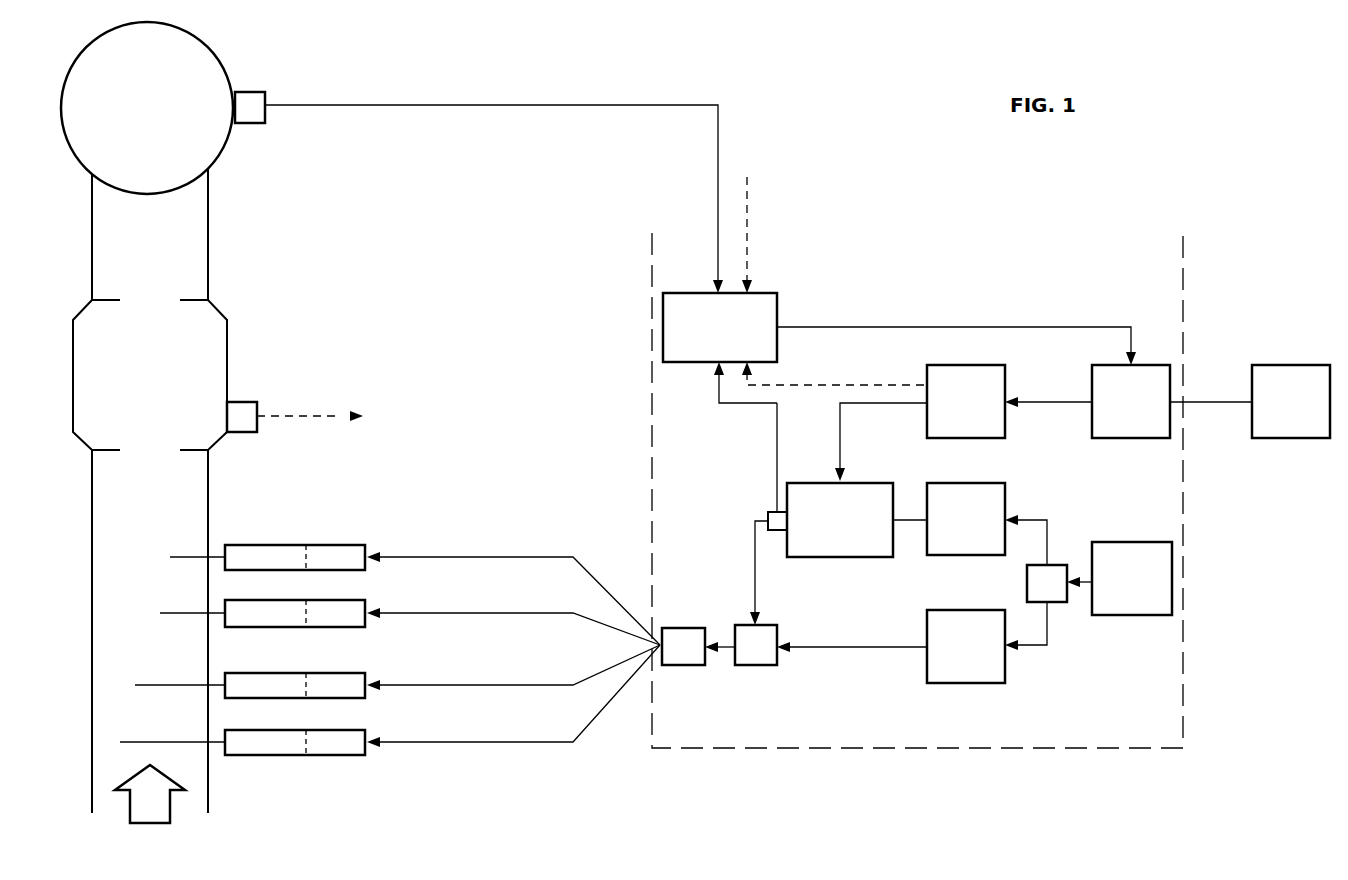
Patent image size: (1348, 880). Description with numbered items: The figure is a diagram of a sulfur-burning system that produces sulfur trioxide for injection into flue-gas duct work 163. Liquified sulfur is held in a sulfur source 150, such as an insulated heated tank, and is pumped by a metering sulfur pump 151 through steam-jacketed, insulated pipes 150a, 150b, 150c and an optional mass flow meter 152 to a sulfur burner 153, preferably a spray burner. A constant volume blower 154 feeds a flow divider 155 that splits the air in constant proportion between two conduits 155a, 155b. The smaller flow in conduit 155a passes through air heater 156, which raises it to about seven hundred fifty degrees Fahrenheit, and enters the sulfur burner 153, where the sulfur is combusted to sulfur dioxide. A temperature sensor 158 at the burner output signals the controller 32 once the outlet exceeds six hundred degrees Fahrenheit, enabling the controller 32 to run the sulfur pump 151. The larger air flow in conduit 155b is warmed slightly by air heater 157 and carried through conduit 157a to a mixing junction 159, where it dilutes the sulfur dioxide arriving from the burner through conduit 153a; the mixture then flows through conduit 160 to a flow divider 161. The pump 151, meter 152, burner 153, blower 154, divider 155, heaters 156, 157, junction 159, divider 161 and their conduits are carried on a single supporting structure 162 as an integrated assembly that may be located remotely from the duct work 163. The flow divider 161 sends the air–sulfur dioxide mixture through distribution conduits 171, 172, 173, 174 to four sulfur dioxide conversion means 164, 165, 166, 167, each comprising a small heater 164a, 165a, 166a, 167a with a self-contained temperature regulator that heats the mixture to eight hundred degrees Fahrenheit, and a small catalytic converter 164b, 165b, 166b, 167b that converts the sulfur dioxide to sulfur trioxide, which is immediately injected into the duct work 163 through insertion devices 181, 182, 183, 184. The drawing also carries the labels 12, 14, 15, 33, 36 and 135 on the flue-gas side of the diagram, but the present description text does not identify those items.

The exhaust pipe 12 is at (208, 812).
The catalytic converter 14 is at (228, 338).
The engine 15 is at (212, 44).
The controller 32 is at (792, 311).
The engine sensor 33 is at (252, 92).
The signal 36 is at (325, 415).
The converter sensor 135 is at (240, 402).
The sulfur source 150 is at (1284, 365).
The sulfur pipe 150a is at (1190, 405).
The sulfur conduit 150b is at (1030, 405).
The sulfur conduit 150c is at (862, 405).
The metering pump 151 is at (1115, 440).
The mass flow meter 152 is at (940, 440).
The sulfur burner 153 is at (868, 560).
The conduit 153a is at (755, 578).
The constant volume blower 154 is at (1130, 618).
The flow divider 155 is at (1053, 603).
The conduit 155a is at (1050, 535).
The conduit 155b is at (1038, 648).
The air heater 156 is at (1008, 502).
The air heater 157 is at (970, 686).
The conduit 157a is at (840, 650).
The temperature sensor 158 is at (768, 513).
The mixing junction 159 is at (760, 667).
The conduit 160 is at (728, 650).
The flow divider 161 is at (680, 628).
The supporting structure 162 is at (1050, 748).
The duct work 163 is at (210, 482).
The sulfur dioxide conversion means 164 is at (298, 548).
The small heater 164a is at (368, 546).
The small catalytic converter 164b is at (270, 534).
The sulfur dioxide conversion means 165 is at (298, 603).
The small heater 165a is at (368, 601).
The small catalytic converter 165b is at (270, 589).
The sulfur dioxide conversion means 166 is at (298, 676).
The small heater 166a is at (368, 674).
The small catalytic converter 166b is at (270, 661).
The sulfur dioxide conversion means 167 is at (298, 733).
The small heater 167a is at (368, 731).
The small catalytic converter 167b is at (270, 718).
The distribution conduit 171 is at (505, 557).
The distribution conduit 172 is at (505, 613).
The distribution conduit 173 is at (505, 685).
The distribution conduit 174 is at (505, 742).
The insertion device 181 is at (170, 557).
The insertion device 182 is at (160, 613).
The insertion device 183 is at (135, 685).
The insertion device 184 is at (120, 742).